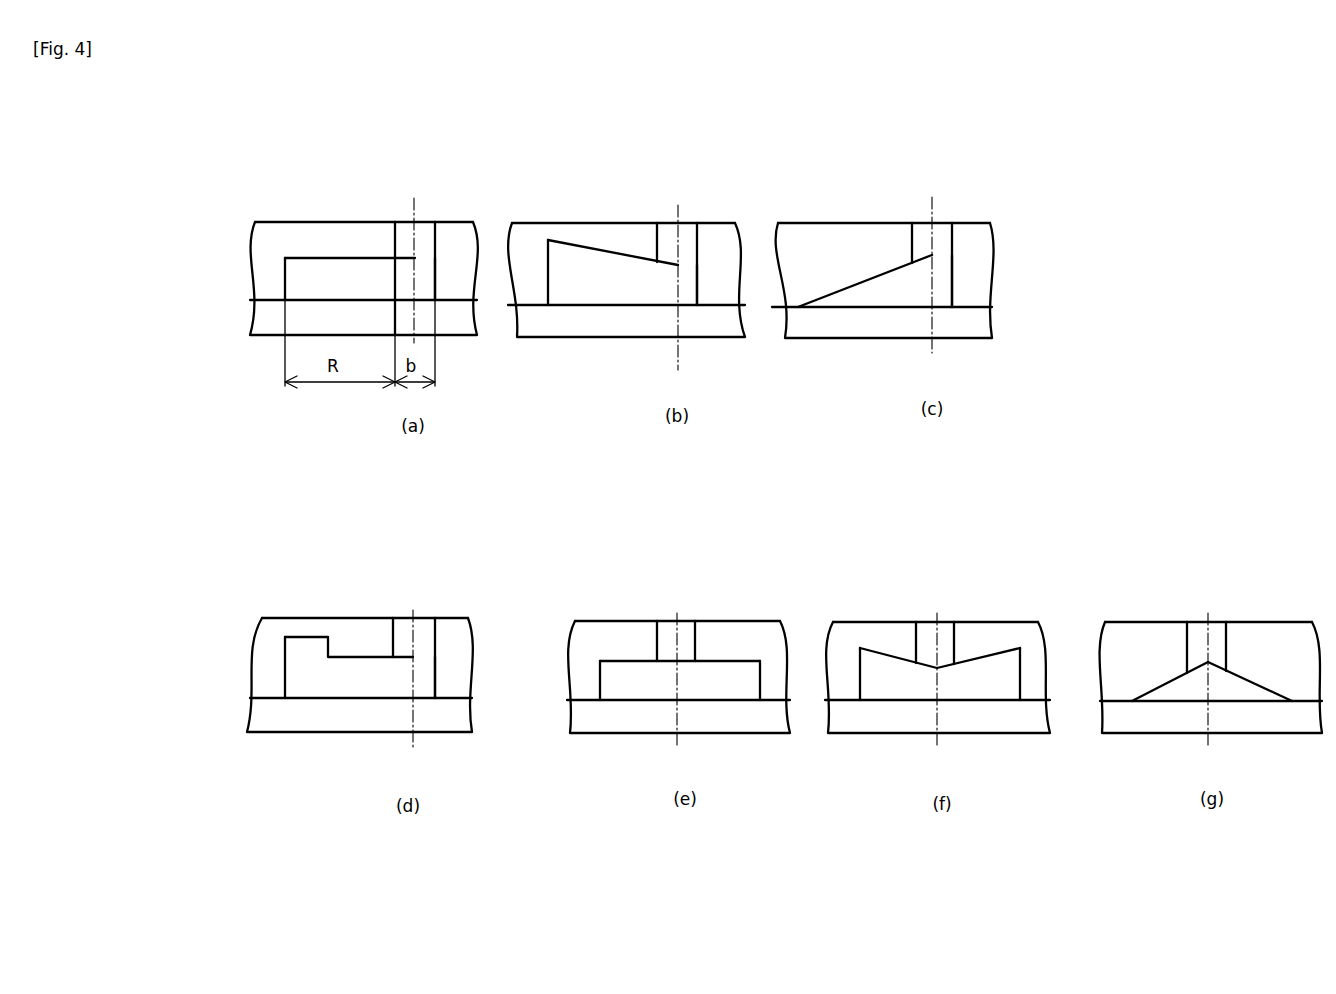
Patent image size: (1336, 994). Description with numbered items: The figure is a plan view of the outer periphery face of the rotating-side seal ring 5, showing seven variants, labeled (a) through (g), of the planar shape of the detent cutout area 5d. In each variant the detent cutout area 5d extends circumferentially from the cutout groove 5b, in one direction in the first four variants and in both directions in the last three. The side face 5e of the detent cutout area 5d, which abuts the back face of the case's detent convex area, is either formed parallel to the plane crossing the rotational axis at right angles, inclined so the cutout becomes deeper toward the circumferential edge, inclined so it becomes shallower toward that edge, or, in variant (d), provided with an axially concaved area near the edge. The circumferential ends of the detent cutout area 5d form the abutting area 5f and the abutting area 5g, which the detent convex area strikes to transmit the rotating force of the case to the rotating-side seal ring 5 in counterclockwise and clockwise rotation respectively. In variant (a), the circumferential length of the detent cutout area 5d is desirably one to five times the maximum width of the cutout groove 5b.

The rotating-side seal ring 5 is at (292, 222).
The cutout groove 5b is at (424, 243).
The detent cutout area 5d is at (353, 282).
The side face of the detent cutout area 5e is at (330, 264).
The abutting area 5f is at (290, 281).
The abutting area 5g is at (433, 285).